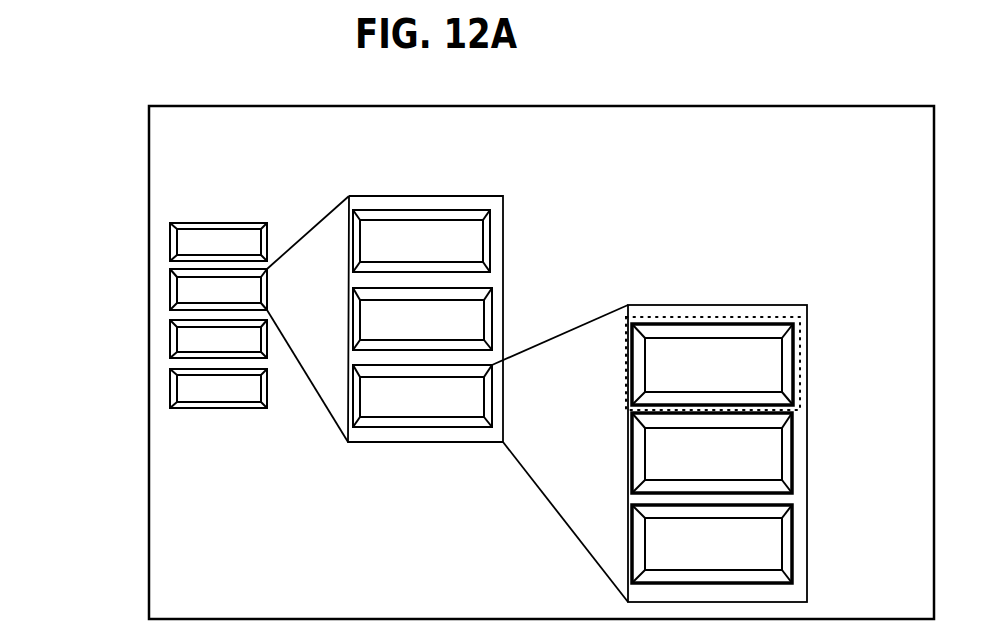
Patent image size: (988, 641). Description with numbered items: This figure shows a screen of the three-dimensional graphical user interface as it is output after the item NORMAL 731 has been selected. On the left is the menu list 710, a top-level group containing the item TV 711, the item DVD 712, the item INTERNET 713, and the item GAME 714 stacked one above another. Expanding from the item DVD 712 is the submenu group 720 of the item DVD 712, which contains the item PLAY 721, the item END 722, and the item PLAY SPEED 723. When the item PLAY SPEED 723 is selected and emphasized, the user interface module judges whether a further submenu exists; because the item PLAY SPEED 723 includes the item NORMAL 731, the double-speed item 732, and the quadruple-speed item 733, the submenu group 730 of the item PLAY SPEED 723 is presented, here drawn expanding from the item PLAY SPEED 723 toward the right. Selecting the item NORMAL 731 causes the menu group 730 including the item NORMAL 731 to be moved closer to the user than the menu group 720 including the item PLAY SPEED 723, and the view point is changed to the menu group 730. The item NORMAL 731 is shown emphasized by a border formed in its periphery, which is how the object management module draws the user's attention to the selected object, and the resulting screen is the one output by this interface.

The menu list 710 is at (90, 223).
The item TV 711 is at (170, 234).
The item DVD 712 is at (170, 285).
The item INTERNET 713 is at (170, 335).
The item GAME 714 is at (170, 385).
The submenu group 720 is at (600, 165).
The item PLAY 721 is at (490, 210).
The item END 722 is at (490, 273).
The item PLAY SPEED 723 is at (492, 365).
The submenu group 730 is at (912, 352).
The item NORMAL 731 is at (795, 331).
The item 2X 732 is at (795, 418).
The item 4X 733 is at (795, 522).